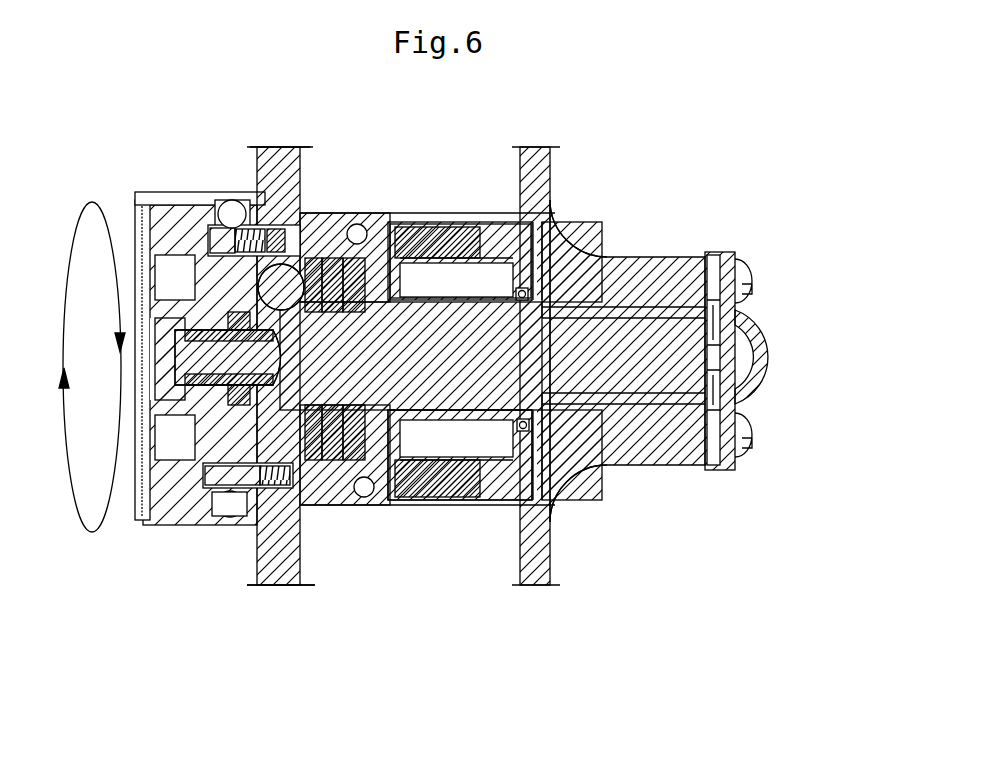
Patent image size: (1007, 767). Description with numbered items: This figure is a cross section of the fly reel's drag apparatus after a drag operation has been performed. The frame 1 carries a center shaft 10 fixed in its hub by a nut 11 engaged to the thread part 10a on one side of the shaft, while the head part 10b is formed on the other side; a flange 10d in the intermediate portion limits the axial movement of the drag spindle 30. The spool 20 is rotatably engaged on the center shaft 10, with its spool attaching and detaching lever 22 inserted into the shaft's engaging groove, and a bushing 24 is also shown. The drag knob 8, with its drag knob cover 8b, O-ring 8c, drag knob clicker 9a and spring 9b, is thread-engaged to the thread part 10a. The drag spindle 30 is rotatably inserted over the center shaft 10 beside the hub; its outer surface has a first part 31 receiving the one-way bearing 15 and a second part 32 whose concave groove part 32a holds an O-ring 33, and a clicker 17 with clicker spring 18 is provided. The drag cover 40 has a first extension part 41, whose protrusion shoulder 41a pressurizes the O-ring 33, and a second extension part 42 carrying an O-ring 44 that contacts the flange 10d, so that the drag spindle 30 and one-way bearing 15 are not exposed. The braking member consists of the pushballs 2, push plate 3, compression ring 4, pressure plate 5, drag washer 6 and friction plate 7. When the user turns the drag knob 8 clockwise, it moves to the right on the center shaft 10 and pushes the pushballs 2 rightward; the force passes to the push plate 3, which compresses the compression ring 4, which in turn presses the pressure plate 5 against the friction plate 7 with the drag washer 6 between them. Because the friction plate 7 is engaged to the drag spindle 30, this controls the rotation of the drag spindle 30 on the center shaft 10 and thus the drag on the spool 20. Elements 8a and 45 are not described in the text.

The frame 1 is at (262, 147).
The pushballs 2 is at (226, 202).
The push plate 3 is at (306, 258).
The compression ring 4 is at (300, 268).
The pressure plate 5 is at (258, 575).
The drag washer 6 is at (294, 577).
The friction plate 7 is at (333, 500).
The drag knob 8 is at (140, 197).
The bolt 8a is at (165, 377).
The drag knob cover 8b is at (143, 478).
The O-ring 8c is at (205, 192).
The drag knob clicker 9a is at (218, 515).
The spring 9b is at (262, 552).
The center shaft 10 is at (624, 387).
The thread part 10a is at (185, 335).
The head part 10b is at (758, 372).
The flange 10d is at (543, 417).
The nut 11 is at (225, 413).
The one-way bearing 15 is at (456, 442).
The clicker 17 is at (425, 235).
The clicker spring 18 is at (462, 245).
The spool 20 is at (637, 262).
The spool attaching and detaching lever 22 is at (720, 332).
The bushing 24 is at (688, 320).
The drag spindle 30 is at (385, 470).
The first part 31 is at (402, 425).
The second part 32 is at (315, 262).
The concave groove part 32a is at (360, 262).
The O-ring 33 is at (364, 497).
The drag cover 40 is at (468, 220).
The first extension part 41 is at (398, 490).
The protrusion shoulder 41a is at (345, 500).
The second extension part 42 is at (547, 285).
The O-ring 44 is at (560, 240).
The housing flange 45 is at (508, 213).